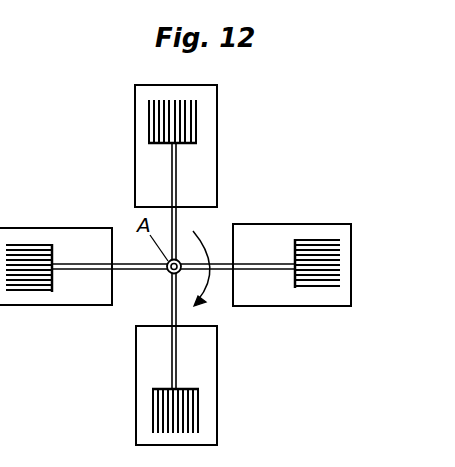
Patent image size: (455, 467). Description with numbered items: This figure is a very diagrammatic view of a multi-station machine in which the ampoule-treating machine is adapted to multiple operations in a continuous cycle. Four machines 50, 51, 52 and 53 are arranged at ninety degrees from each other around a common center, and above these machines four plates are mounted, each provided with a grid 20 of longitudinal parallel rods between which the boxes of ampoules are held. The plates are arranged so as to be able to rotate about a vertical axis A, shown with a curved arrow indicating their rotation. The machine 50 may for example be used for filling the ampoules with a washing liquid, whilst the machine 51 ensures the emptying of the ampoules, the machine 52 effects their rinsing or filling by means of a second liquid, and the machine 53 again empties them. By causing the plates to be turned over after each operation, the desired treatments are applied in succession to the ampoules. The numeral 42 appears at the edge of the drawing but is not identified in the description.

The grid 20 is at (183, 120).
The rotor assembly 42 is at (147, 266).
The machine 50 is at (195, 177).
The machine 51 is at (277, 248).
The machine 52 is at (195, 363).
The machine 53 is at (78, 257).